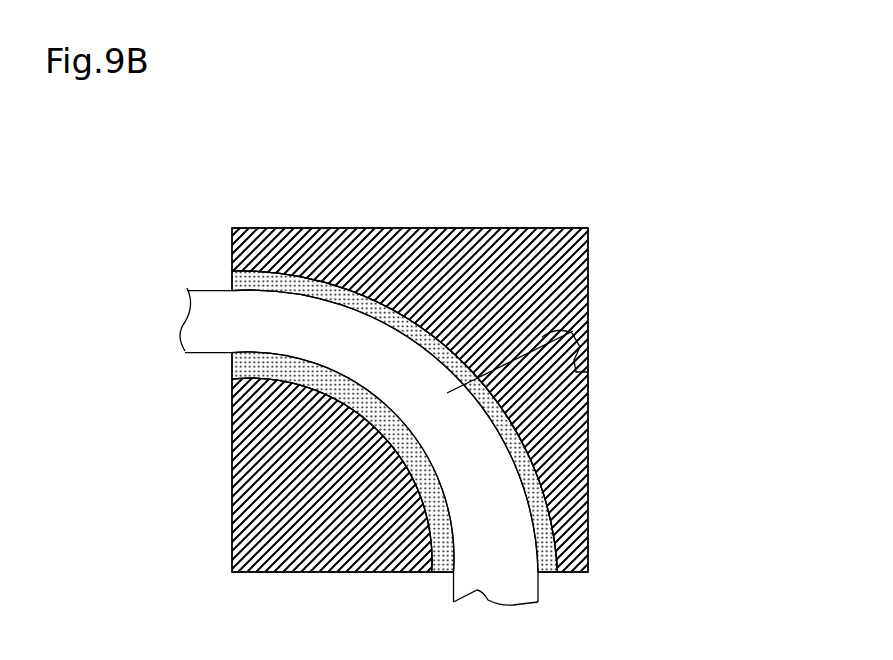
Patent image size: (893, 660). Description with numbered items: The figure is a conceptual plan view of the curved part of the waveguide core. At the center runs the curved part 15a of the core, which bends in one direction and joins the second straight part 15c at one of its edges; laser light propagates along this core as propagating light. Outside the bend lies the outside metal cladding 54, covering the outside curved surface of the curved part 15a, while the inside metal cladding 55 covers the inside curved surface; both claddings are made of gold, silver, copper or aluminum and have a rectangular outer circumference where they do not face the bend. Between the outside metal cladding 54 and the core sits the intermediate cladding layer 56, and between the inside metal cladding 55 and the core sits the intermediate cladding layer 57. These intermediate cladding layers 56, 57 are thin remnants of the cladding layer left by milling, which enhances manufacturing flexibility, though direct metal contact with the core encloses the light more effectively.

The outside metal cladding 54 is at (514, 228).
The inside metal cladding 55 is at (238, 516).
The intermediate cladding layer 56 is at (297, 277).
The intermediate cladding layer 57 is at (245, 372).
The curved part 15a is at (588, 372).
The second straight part 15c is at (200, 303).